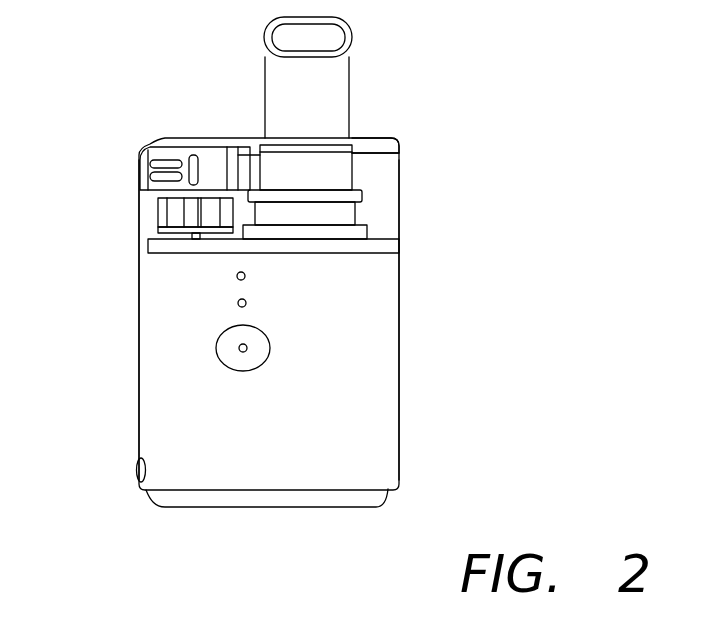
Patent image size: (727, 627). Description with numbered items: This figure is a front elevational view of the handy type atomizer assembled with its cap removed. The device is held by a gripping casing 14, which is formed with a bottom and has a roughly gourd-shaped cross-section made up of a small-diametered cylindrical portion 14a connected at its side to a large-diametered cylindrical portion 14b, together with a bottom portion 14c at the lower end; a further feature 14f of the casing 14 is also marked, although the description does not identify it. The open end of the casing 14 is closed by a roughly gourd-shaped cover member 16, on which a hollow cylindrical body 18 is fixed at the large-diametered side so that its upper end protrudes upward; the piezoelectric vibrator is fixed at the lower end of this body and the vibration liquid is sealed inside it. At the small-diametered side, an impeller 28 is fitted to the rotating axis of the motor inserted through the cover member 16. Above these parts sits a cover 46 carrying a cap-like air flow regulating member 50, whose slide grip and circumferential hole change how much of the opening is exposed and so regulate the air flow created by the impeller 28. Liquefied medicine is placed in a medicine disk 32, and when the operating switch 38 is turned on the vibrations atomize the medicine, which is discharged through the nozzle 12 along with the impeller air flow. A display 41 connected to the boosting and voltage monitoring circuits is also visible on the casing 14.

The nozzle 12 is at (337, 73).
The gripping casing 14 is at (126, 422).
The small-diametered cylindrical portion 14a is at (153, 347).
The large-diametered cylindrical portion 14b is at (382, 373).
The bottom portion 14c is at (273, 507).
The housing opening 14f is at (137, 470).
The cover member 16 is at (383, 247).
The hollow cylindrical body 18 is at (348, 215).
The impeller 28 is at (158, 217).
The medicine disk 32 is at (362, 197).
The operating switch 38 is at (252, 357).
The display 41 is at (246, 276).
The cover 46 is at (402, 162).
The air flow regulating member 50 is at (180, 148).